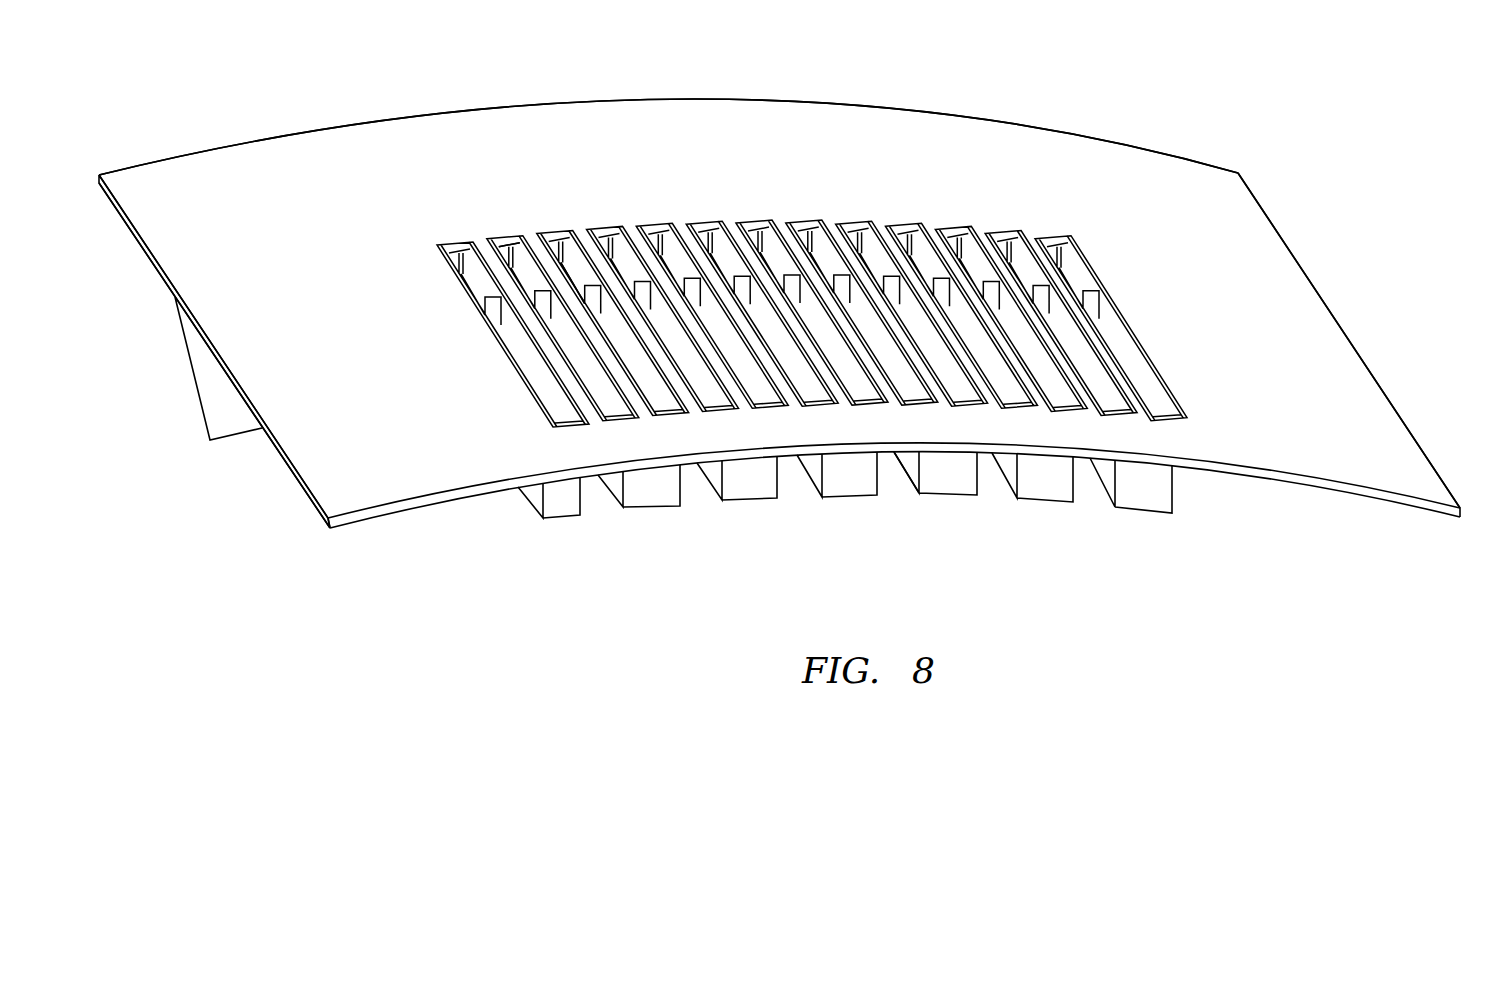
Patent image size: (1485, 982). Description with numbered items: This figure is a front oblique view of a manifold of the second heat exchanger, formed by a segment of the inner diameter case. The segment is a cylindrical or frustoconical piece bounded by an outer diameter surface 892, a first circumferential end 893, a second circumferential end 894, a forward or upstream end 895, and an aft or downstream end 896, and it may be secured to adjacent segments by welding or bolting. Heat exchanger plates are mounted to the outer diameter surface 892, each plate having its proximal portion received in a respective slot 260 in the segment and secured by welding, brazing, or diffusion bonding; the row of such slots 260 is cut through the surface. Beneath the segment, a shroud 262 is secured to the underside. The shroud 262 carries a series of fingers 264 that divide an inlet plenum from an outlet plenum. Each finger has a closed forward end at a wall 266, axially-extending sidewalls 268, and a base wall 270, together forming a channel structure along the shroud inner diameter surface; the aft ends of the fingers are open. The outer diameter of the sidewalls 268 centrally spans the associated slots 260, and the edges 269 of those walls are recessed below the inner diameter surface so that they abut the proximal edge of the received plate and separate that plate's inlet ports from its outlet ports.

The slot 260 is at (1097, 307).
The shroud 262 is at (653, 515).
The fingers 264 is at (739, 482).
The walls 266 is at (848, 475).
The sidewalls 268 is at (552, 322).
The edges 269 is at (528, 238).
The base wall 270 is at (1048, 502).
The outer diameter surface 892 is at (1285, 282).
The first circumferential end 893 is at (1377, 375).
The second circumferential end 894 is at (315, 512).
The forward end 895 is at (1280, 473).
The aft end 896 is at (633, 99).